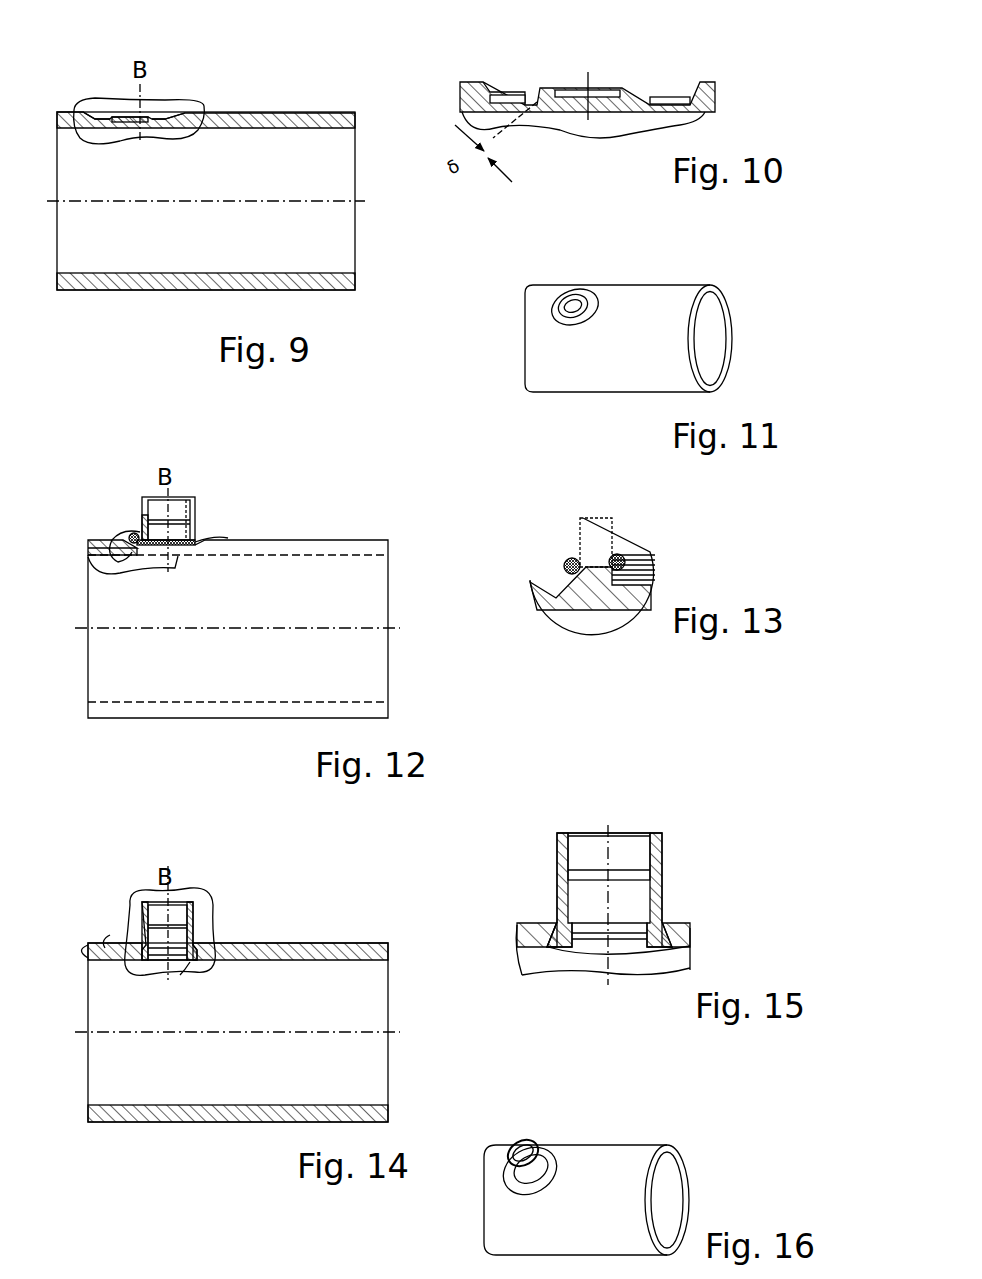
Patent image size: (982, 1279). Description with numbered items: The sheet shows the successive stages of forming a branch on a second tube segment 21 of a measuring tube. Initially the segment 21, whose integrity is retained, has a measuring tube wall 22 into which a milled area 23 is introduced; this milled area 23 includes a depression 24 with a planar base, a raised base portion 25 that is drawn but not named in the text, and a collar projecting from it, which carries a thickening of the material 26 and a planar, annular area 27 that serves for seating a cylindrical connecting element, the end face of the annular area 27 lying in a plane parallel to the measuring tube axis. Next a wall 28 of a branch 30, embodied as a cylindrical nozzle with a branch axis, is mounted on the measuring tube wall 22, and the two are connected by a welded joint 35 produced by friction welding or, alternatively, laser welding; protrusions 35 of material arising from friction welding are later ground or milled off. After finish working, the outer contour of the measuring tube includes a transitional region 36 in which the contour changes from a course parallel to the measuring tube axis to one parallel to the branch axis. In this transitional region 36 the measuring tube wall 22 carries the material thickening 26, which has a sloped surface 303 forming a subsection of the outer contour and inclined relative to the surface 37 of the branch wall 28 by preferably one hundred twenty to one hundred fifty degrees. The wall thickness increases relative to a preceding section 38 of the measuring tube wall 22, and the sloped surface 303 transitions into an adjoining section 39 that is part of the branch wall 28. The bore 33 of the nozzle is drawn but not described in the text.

In FIG. 9, the second tube segment 21 is at (245, 105).
In FIG. 12, the second tube segment 21 is at (362, 535).
In FIG. 14, the second tube segment 21 is at (365, 937).
In FIG. 9, the measuring tube wall 22 is at (330, 112).
In FIG. 11, the measuring tube wall 22 is at (628, 337).
In FIG. 12, the measuring tube wall 22 is at (88, 548).
In FIG. 13, the measuring tube wall 22 is at (598, 600).
In FIG. 14, the measuring tube wall 22 is at (305, 943).
In FIG. 16, the measuring tube wall 22 is at (630, 1160).
In FIG. 9, the milled area 23 is at (165, 118).
In FIG. 9, the depression 24 is at (100, 118).
In FIG. 10, the depression 24 is at (510, 95).
In FIG. 9, the plateau 25 is at (130, 117).
In FIG. 10, the material thickening 26 is at (533, 100).
In FIG. 14, the material thickening 26 is at (192, 972).
In FIG. 15, the material thickening 26 is at (574, 947).
In FIG. 10, the planar annular area 27 is at (548, 87).
In FIG. 12, the branch wall 28 is at (145, 508).
In FIG. 13, the branch wall 28 is at (598, 545).
In FIG. 14, the branch wall 28 is at (145, 928).
In FIG. 15, the branch wall 28 is at (662, 896).
In FIG. 12, the branch 30 is at (195, 531).
In FIG. 14, the branch 30 is at (190, 906).
In FIG. 16, the branch 30 is at (546, 1163).
In FIG. 12, the bore 33 is at (195, 503).
In FIG. 15, the bore 33 is at (575, 850).
In FIG. 12, the welded joint 35 is at (130, 536).
In FIG. 13, the welded joint 35 is at (565, 562).
In FIG. 14, the welded joint 35 is at (195, 937).
In FIG. 14, the transitional region 36 is at (118, 972).
In FIG. 15, the surface of the branch wall 37 is at (560, 845).
In FIG. 13, the preceding section 38 is at (590, 560).
In FIG. 15, the preceding section 38 is at (548, 947).
In FIG. 12, the adjoining section 39 is at (122, 560).
In FIG. 15, the sloped surface 303 is at (558, 928).